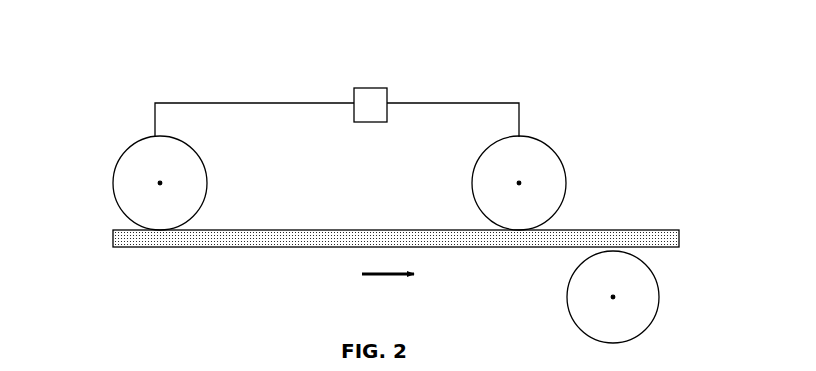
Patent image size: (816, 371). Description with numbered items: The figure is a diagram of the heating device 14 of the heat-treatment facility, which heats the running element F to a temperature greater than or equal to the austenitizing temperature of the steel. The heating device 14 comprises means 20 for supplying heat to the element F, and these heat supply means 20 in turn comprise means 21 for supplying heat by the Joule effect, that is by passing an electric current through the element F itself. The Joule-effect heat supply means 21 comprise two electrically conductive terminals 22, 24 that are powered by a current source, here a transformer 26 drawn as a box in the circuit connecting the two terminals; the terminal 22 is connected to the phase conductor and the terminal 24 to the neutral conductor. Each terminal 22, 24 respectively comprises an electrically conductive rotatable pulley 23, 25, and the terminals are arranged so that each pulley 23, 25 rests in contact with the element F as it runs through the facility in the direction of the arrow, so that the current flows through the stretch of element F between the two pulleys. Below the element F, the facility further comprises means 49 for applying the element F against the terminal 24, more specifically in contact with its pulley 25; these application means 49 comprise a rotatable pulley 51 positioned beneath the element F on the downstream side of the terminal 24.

The means for supplying heat 20 is at (115, 99).
The heating device 14 is at (320, 58).
The means for supplying heat by the Joule effect 21 is at (260, 87).
The transformer 26 is at (368, 112).
The electrically conductive terminal 22 is at (110, 148).
The electrically conductive rotatable pulley 23 is at (128, 212).
The electrically conductive terminal 24 is at (572, 148).
The electrically conductive rotatable pulley 25 is at (492, 210).
The element F is at (230, 242).
The means for applying the element against the terminals 49 is at (669, 292).
The rotatable pulley 51 is at (612, 265).